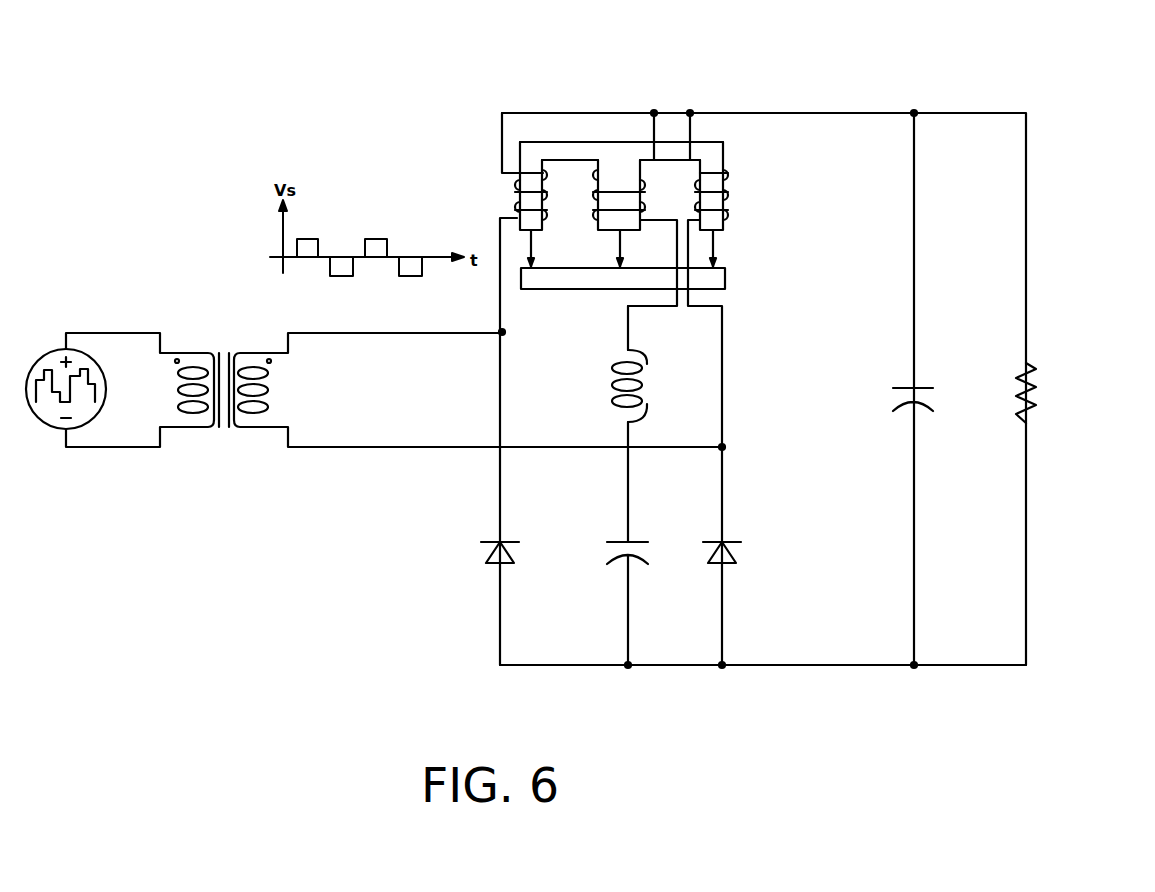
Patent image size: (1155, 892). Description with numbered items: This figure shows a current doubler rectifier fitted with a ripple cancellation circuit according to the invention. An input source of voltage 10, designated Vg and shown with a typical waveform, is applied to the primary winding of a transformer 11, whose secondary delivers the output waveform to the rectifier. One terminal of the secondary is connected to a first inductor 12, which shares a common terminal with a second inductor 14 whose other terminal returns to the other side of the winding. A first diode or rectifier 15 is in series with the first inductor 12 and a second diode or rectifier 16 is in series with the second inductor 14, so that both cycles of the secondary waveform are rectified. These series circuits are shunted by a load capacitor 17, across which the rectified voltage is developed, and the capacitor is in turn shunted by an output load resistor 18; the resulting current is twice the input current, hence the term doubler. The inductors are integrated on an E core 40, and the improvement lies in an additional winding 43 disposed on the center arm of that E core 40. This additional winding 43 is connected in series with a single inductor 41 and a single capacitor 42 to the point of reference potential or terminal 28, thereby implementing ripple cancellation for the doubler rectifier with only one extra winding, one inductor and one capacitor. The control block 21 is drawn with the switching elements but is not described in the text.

The input source of voltage 10 is at (55, 428).
The transformer 11 is at (241, 432).
The first inductor 12 is at (512, 188).
The second inductor 14 is at (733, 183).
The first diode or rectifier 15 is at (480, 551).
The second diode or rectifier 16 is at (738, 552).
The load capacitor 17 is at (885, 398).
The output load resistor 18 is at (1032, 418).
The switch control block sym1 21 is at (726, 277).
The point of reference potential or terminal 28 is at (765, 668).
The E core 40 is at (705, 141).
The single inductor 41 is at (610, 385).
The single capacitor 42 is at (605, 552).
The additional winding 43 is at (620, 181).